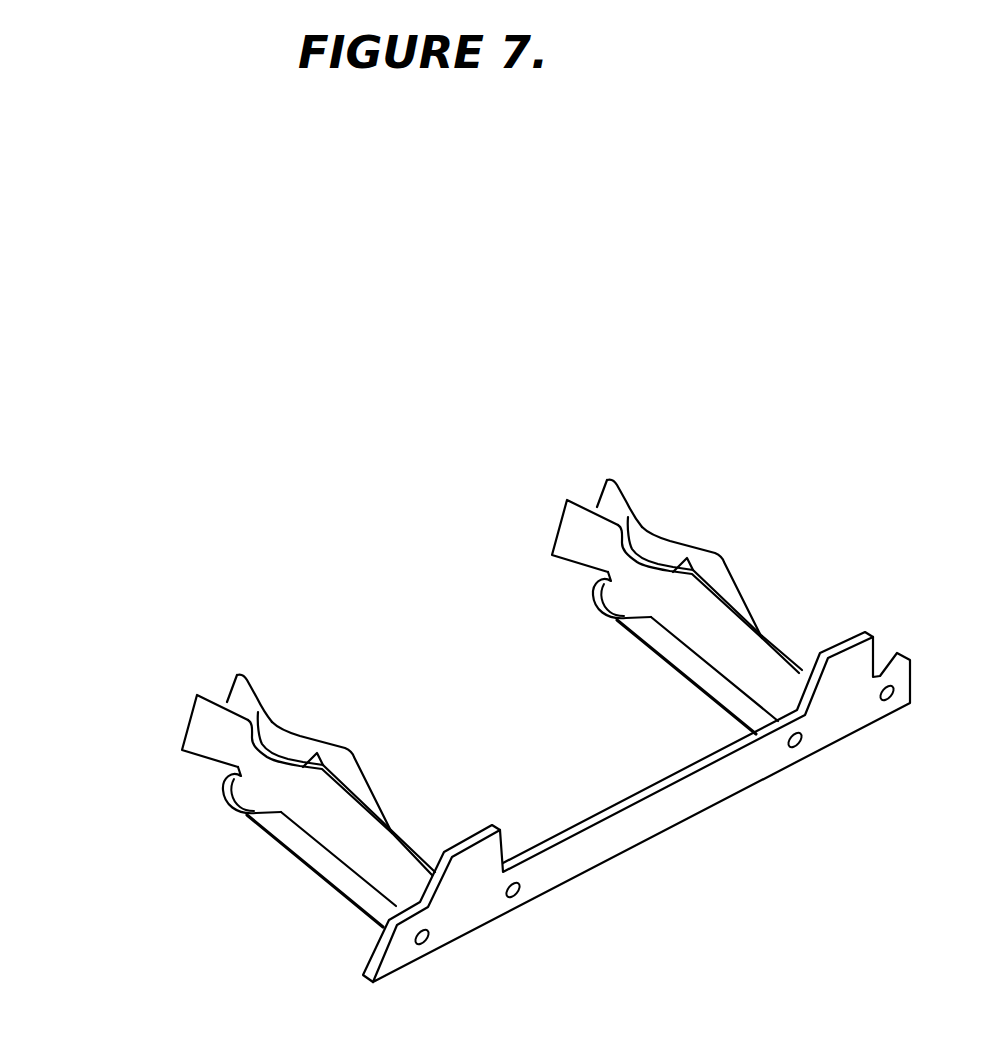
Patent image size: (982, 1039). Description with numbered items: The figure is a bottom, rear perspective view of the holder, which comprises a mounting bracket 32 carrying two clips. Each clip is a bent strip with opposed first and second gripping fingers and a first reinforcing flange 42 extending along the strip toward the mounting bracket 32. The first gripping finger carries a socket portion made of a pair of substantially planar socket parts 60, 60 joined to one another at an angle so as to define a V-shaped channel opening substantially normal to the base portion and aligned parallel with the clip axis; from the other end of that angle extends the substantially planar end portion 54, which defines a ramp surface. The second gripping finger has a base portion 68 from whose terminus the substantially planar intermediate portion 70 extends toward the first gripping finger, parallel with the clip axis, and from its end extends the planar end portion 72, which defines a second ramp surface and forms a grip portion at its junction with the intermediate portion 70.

The mounting bracket 32 is at (621, 837).
The first reinforcing flange 42 is at (350, 895).
The end portion 54 is at (203, 733).
The socket part 60 is at (235, 751).
The base portion 68 is at (369, 785).
The intermediate portion 70 is at (312, 736).
The end portion 72 is at (238, 700).